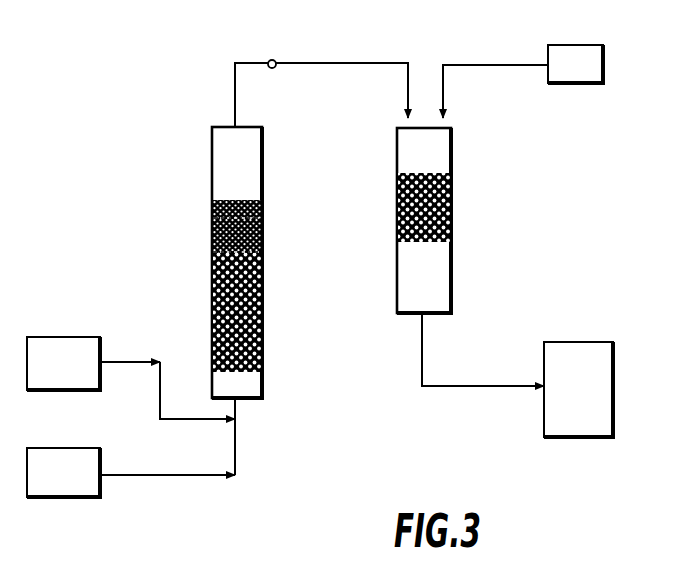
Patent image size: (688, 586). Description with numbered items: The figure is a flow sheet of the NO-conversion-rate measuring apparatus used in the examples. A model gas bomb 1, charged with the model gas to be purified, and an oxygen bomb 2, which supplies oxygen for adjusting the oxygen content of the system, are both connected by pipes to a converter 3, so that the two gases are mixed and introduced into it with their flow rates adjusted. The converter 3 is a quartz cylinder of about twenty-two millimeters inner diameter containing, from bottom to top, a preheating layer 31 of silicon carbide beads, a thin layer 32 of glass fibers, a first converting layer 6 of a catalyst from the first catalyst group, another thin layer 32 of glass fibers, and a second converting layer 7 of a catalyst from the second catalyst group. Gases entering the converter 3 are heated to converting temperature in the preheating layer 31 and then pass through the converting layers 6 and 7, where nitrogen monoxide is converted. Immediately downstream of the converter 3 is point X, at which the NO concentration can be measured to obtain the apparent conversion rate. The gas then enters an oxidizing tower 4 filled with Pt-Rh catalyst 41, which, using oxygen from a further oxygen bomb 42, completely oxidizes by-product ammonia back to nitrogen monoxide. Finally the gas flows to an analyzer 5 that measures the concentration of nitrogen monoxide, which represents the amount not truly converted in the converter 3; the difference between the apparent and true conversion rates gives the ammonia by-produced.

The model gas bomb 1 is at (52, 337).
The oxygen bomb 2 is at (62, 448).
The converter 3 is at (262, 150).
The oxidizing tower 4 is at (451, 152).
The analyzer 5 is at (613, 393).
The first converting layer 6 is at (272, 236).
The second converting layer 7 is at (261, 212).
The preheating layer 31 is at (261, 306).
The thin layer of glass fibers 32 is at (212, 218).
The Pt-Rh catalyst 41 is at (450, 212).
The oxygen bomb 42 is at (603, 57).
The point X is at (272, 60).